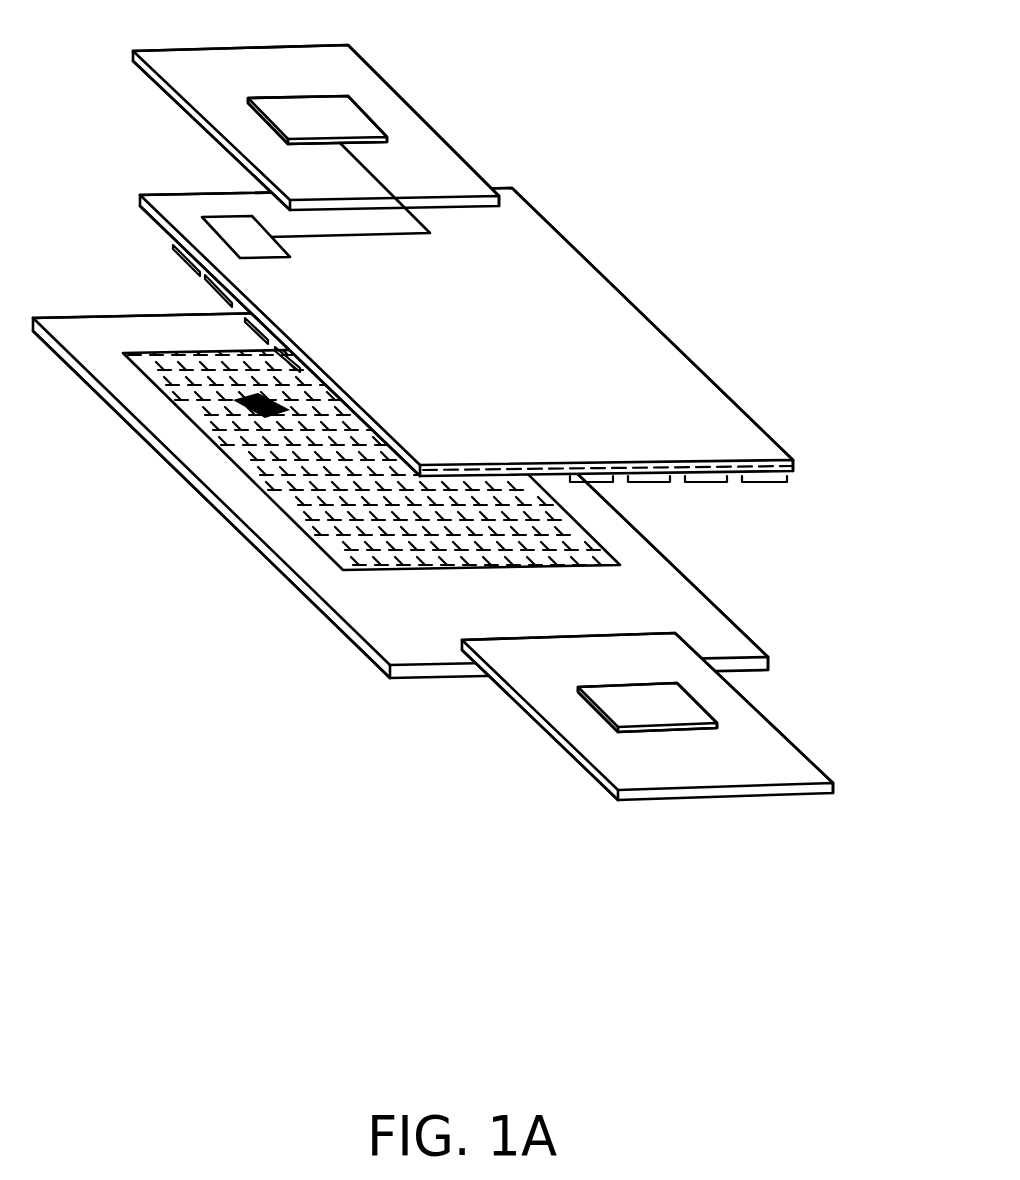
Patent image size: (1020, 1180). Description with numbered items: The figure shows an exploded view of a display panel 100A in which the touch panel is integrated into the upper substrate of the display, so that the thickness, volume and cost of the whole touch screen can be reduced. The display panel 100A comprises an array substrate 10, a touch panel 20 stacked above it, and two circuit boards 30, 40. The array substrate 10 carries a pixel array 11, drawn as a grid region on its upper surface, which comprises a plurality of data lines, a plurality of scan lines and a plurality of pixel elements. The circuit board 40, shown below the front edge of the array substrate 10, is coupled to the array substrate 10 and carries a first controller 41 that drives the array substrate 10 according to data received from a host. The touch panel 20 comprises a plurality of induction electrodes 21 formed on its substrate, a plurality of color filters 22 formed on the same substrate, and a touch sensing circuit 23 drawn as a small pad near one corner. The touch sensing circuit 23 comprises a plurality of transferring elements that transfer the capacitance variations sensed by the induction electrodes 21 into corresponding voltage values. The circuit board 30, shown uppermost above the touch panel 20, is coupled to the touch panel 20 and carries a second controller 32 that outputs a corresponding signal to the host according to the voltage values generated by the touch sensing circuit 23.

The array substrate 10 is at (740, 630).
The pixel array 11 is at (593, 537).
The touch panel 20 is at (585, 302).
The induction electrodes 21 is at (797, 450).
The color filters 22 is at (762, 484).
The touch sensing circuit 23 is at (227, 216).
The circuit board 30 is at (370, 66).
The second controller 32 is at (362, 110).
The circuit board 40 is at (803, 753).
The first controller 41 is at (693, 698).
The display panel 100A is at (221, 773).